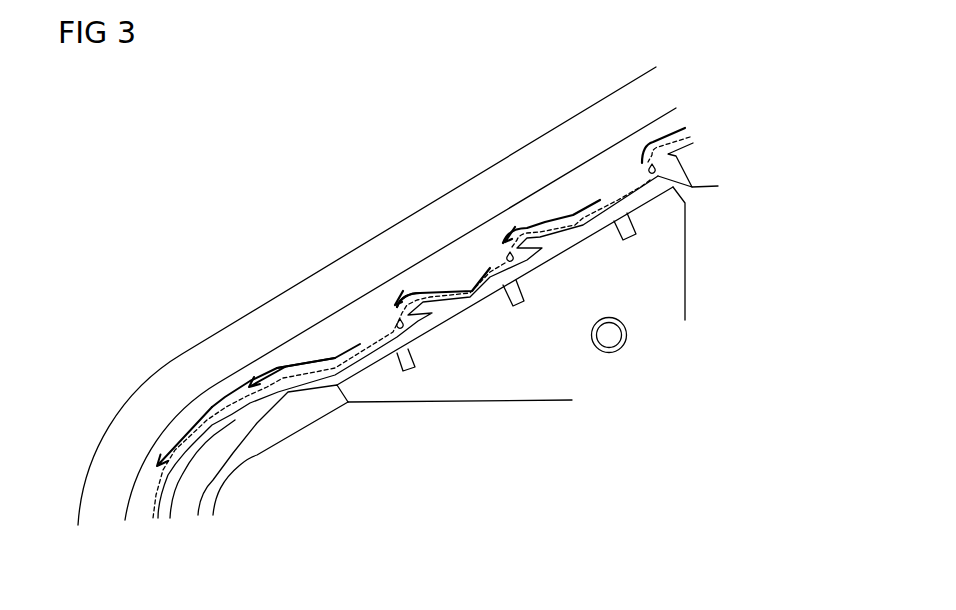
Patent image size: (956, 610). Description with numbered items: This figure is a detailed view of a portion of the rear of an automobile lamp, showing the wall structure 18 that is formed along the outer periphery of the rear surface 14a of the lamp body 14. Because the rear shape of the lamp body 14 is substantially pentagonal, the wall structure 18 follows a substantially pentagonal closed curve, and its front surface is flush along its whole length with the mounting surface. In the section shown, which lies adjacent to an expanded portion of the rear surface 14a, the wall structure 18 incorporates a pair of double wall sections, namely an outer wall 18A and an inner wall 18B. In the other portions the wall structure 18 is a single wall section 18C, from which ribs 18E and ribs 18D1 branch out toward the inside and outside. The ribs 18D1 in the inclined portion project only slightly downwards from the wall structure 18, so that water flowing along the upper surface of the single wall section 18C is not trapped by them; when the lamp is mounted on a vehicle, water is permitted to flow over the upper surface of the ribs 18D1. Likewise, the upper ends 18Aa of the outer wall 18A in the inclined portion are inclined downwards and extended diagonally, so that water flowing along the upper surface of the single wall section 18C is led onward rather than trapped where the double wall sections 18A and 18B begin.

The lamp body 14 is at (377, 296).
The rear surface 14a is at (470, 238).
The wall structure 18 is at (458, 294).
The outer wall 18A is at (243, 410).
The upper end of outer wall 18Aa is at (313, 383).
The inner wall 18B is at (700, 188).
The single wall section 18C is at (421, 333).
The rib 18D1 is at (428, 302).
The rib 18E is at (397, 355).